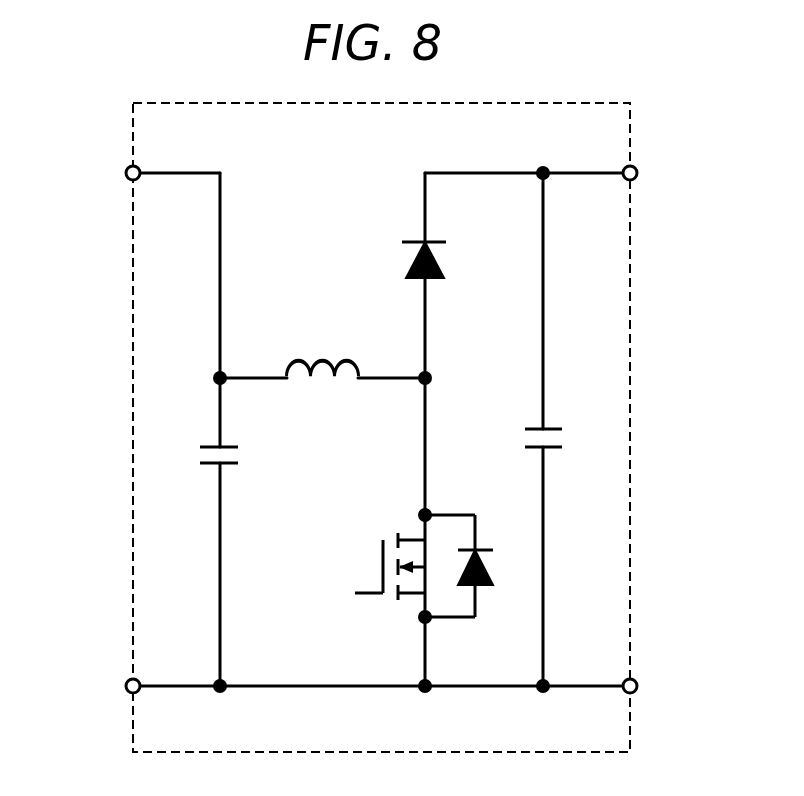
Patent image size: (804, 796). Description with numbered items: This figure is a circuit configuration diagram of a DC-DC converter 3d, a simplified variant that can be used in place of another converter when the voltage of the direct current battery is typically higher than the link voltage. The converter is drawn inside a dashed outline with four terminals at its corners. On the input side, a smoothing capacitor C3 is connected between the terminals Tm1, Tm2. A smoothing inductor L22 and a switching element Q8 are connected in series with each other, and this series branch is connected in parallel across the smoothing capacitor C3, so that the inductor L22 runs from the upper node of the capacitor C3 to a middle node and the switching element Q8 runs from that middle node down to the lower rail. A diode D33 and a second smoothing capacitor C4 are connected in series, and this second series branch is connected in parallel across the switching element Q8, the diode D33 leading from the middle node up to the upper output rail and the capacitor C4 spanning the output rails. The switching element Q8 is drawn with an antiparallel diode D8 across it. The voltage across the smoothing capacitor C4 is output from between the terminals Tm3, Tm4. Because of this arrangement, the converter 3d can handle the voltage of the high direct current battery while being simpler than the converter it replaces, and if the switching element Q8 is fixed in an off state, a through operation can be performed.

The DC-DC converter 3d is at (290, 108).
The terminal Tm1 is at (127, 168).
The terminal Tm2 is at (127, 680).
The terminal Tm3 is at (637, 167).
The terminal Tm4 is at (637, 680).
The smoothing inductor L22 is at (318, 360).
The smoothing capacitor C3 is at (200, 459).
The smoothing capacitor C4 is at (563, 428).
The diode D33 is at (402, 241).
The diode D8 is at (458, 592).
The switching element Q8 is at (383, 559).